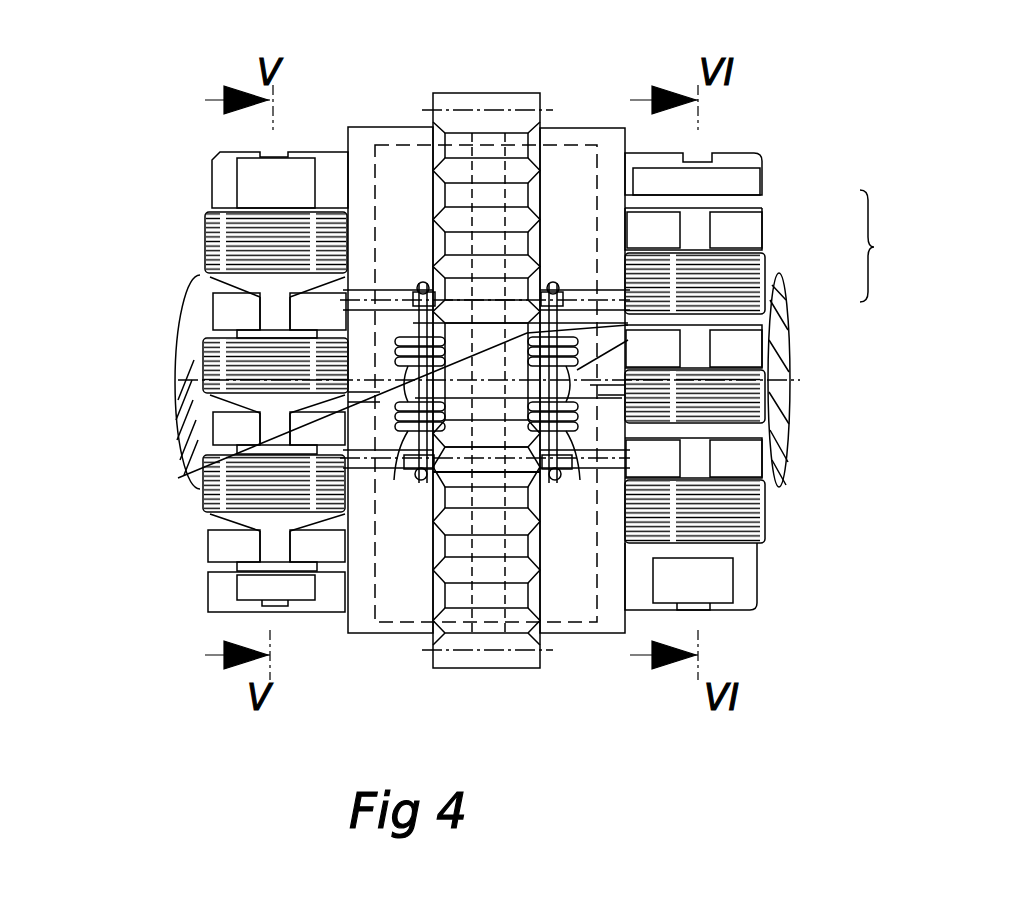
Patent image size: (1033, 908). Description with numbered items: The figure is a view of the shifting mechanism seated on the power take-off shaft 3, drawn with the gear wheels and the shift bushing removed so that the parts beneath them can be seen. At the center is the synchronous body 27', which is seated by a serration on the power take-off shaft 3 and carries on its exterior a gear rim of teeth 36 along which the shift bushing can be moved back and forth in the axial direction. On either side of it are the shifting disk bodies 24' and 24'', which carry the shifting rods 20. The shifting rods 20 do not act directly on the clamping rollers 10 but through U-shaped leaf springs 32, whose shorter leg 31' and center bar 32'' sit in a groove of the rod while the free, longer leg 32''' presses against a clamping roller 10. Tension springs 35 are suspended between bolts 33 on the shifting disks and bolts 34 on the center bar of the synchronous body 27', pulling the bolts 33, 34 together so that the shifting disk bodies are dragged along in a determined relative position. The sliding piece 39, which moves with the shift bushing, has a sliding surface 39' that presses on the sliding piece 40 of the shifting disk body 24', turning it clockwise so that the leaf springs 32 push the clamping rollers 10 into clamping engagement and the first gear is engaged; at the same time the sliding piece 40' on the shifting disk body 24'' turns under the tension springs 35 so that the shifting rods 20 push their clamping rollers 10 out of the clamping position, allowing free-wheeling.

The power take-off shaft 3 is at (777, 450).
The clamping roller 10 is at (243, 238).
The shifting rod 20 is at (230, 312).
The shifting disk body 24' is at (596, 328).
The shifting disk body 24'' is at (383, 328).
The synchronous body 27' is at (486, 345).
The plate 31' is at (734, 186).
The leaf spring 32 is at (885, 246).
The center bar of leaf spring 32'' is at (739, 238).
The free longer leg of leaf spring 32''' is at (742, 286).
The bolt 33 is at (588, 470).
The bolt 34 is at (440, 470).
The tension spring 35 is at (407, 423).
The teeth 36 is at (443, 170).
The sliding piece 39 is at (403, 250).
The sliding surface 39' is at (709, 474).
The sliding piece 40 is at (713, 473).
The sliding piece 40' is at (249, 443).